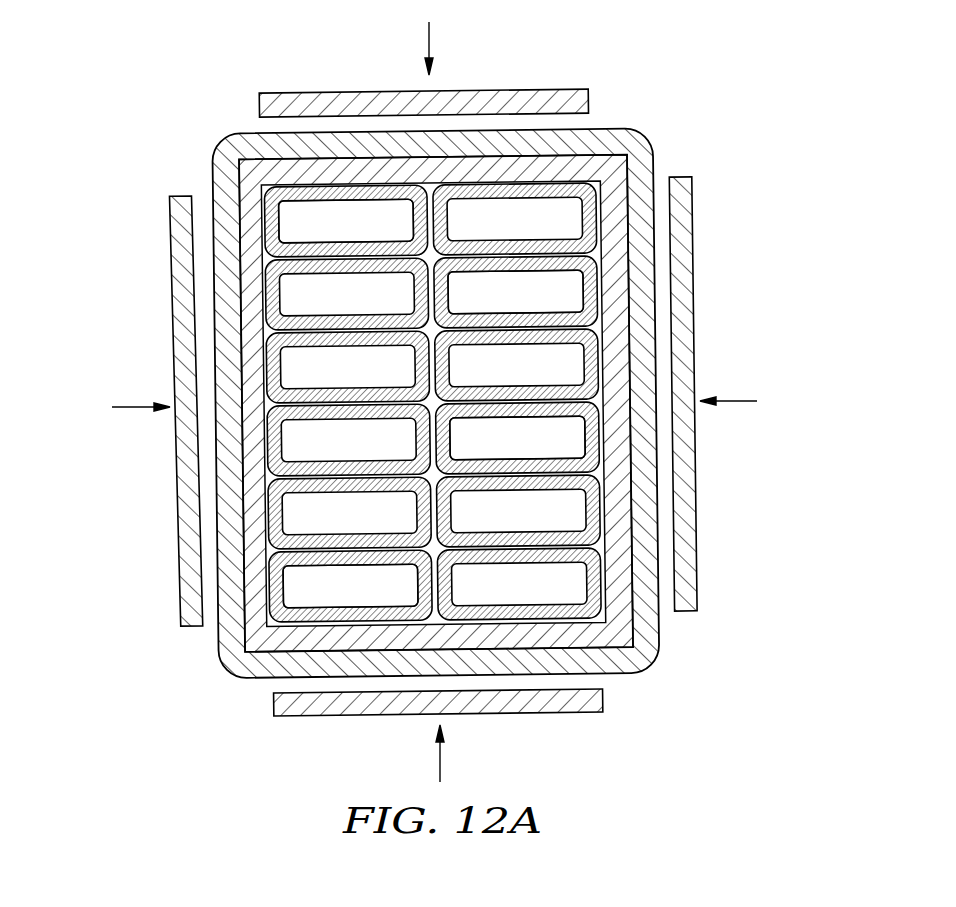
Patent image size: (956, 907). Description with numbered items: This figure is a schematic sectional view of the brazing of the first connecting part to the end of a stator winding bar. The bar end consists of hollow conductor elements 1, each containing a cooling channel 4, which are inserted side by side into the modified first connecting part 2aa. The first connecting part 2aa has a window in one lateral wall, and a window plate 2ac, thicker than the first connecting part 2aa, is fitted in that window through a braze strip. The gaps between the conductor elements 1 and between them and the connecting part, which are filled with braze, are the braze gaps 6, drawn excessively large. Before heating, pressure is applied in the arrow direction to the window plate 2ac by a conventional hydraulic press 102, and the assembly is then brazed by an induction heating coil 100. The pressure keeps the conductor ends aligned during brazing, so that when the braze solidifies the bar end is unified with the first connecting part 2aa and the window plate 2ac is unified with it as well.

The hollow conductor element 1 is at (437, 403).
The first connecting part 2aa is at (252, 248).
The window plate 2ac is at (620, 508).
The cooling channel 4 is at (357, 233).
The braze gap 6 is at (268, 333).
The induction heating coil 100 is at (431, 407).
The hydraulic press 102 is at (531, 90).